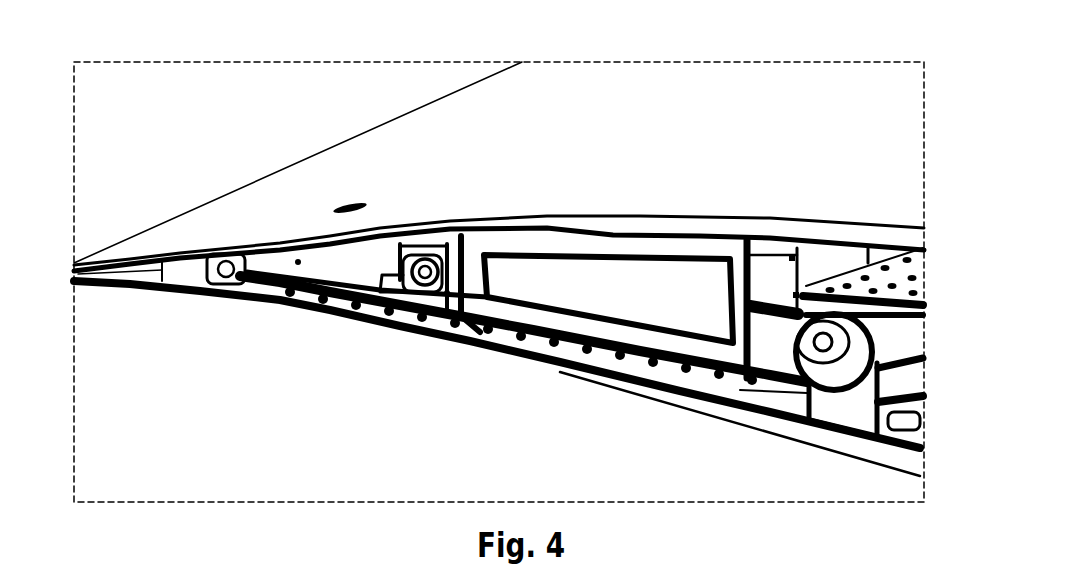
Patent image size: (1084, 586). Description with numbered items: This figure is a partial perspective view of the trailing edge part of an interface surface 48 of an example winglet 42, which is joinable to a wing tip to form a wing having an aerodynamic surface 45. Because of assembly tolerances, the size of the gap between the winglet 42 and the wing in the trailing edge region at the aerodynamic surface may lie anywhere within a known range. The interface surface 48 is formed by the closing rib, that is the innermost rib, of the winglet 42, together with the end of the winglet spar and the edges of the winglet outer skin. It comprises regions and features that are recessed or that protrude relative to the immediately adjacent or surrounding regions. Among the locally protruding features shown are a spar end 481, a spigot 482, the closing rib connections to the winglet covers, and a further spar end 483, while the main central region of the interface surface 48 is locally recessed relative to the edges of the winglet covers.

The winglet 42 is at (388, 78).
The aerodynamic surface 45 is at (636, 144).
The interface surface 48 is at (528, 331).
The spar end 481 is at (430, 313).
The spigot 482 is at (405, 277).
The spar end 483 is at (823, 262).